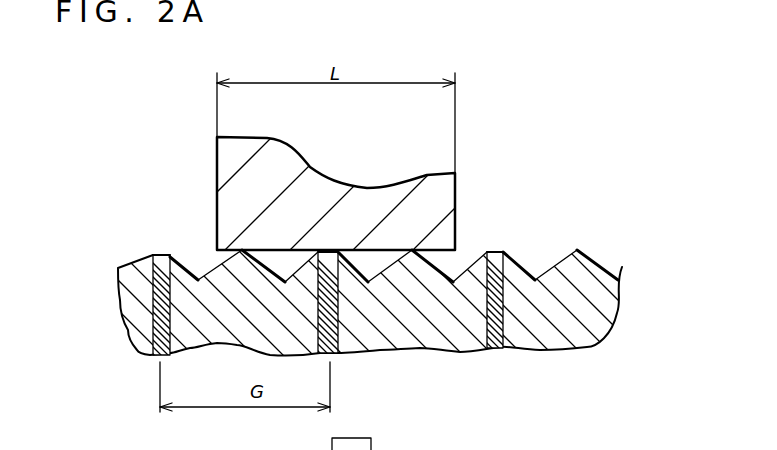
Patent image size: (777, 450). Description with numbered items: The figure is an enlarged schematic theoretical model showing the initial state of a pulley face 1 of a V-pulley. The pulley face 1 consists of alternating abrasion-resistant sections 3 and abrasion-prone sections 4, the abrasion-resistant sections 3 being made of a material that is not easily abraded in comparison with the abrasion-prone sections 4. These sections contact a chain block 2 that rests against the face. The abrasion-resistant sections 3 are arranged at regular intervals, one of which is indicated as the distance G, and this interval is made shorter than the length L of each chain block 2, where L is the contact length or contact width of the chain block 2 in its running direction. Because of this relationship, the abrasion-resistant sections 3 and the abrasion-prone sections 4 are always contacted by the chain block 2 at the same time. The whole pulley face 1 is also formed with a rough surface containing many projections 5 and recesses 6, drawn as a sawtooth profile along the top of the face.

The pulley face 1 is at (603, 243).
The chain block 2 is at (435, 197).
The abrasion-resistant section 3 is at (152, 310).
The abrasion-prone section 4 is at (245, 288).
The projection 5 is at (153, 254).
The recess 6 is at (197, 280).